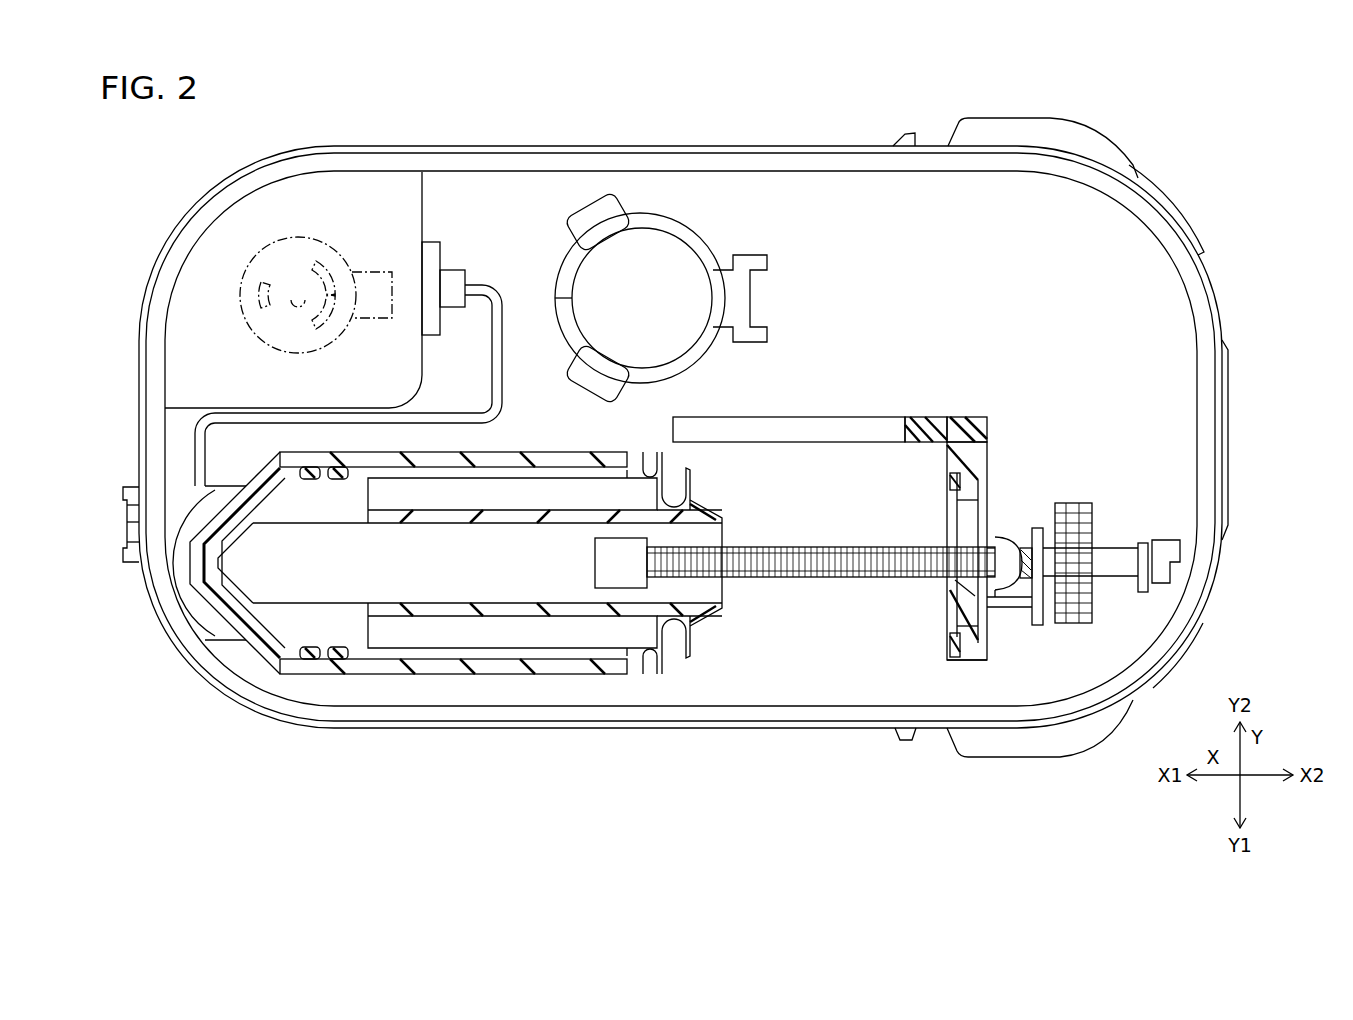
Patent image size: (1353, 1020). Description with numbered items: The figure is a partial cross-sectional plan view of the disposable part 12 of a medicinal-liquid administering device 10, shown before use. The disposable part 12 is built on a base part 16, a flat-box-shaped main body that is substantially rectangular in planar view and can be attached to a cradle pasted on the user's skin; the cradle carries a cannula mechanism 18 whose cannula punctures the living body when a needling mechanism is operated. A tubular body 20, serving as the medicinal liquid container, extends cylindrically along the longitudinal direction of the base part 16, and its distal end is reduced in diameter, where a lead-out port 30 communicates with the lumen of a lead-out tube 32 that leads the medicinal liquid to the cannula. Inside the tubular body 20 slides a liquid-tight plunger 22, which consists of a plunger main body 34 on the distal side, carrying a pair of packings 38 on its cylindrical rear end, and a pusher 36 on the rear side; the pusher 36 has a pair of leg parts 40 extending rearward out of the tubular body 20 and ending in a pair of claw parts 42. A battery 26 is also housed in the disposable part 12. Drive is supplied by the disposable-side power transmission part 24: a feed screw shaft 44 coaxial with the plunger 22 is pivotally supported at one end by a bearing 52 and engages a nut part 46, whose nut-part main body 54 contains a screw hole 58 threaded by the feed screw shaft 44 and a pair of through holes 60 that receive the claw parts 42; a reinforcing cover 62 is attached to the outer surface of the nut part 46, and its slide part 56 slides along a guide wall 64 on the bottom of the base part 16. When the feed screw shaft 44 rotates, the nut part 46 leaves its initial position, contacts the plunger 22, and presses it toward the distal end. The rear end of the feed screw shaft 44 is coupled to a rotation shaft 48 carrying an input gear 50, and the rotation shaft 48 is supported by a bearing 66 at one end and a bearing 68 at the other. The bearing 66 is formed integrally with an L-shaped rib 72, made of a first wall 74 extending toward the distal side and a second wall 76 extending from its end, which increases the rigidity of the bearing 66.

The medicinal-liquid administering device 10 is at (513, 100).
The disposable part 12 is at (450, 100).
The base part 16 is at (458, 729).
The cannula mechanism 18 is at (300, 237).
The tubular body 20 is at (396, 666).
The plunger 22 is at (235, 605).
The disposable-side power transmission part 24 is at (848, 640).
The battery 26 is at (660, 240).
The lead-out port 30 is at (188, 514).
The lead-out tube 32 is at (491, 358).
The plunger main body 34 is at (270, 630).
The pusher 36 is at (645, 674).
The packings 38 is at (310, 672).
The leg parts 40 is at (549, 504).
The claw parts 42 is at (719, 525).
The feed screw shaft 44 is at (805, 578).
The nut part 46 is at (955, 428).
The rotation shaft 48 is at (1116, 577).
The input gear 50 is at (1072, 626).
The bearing 52 is at (593, 560).
The nut-part main body 54 is at (972, 656).
The slide part 56 is at (933, 428).
The screw hole 58 is at (958, 569).
The through holes 60 is at (965, 526).
The reinforcing cover 62 is at (948, 650).
The guide wall 64 is at (727, 425).
The bearing 66 is at (1038, 627).
The bearing 68 is at (1143, 540).
The rib 72 is at (1043, 502).
The first wall 74 is at (1034, 601).
The second wall 76 is at (1005, 540).